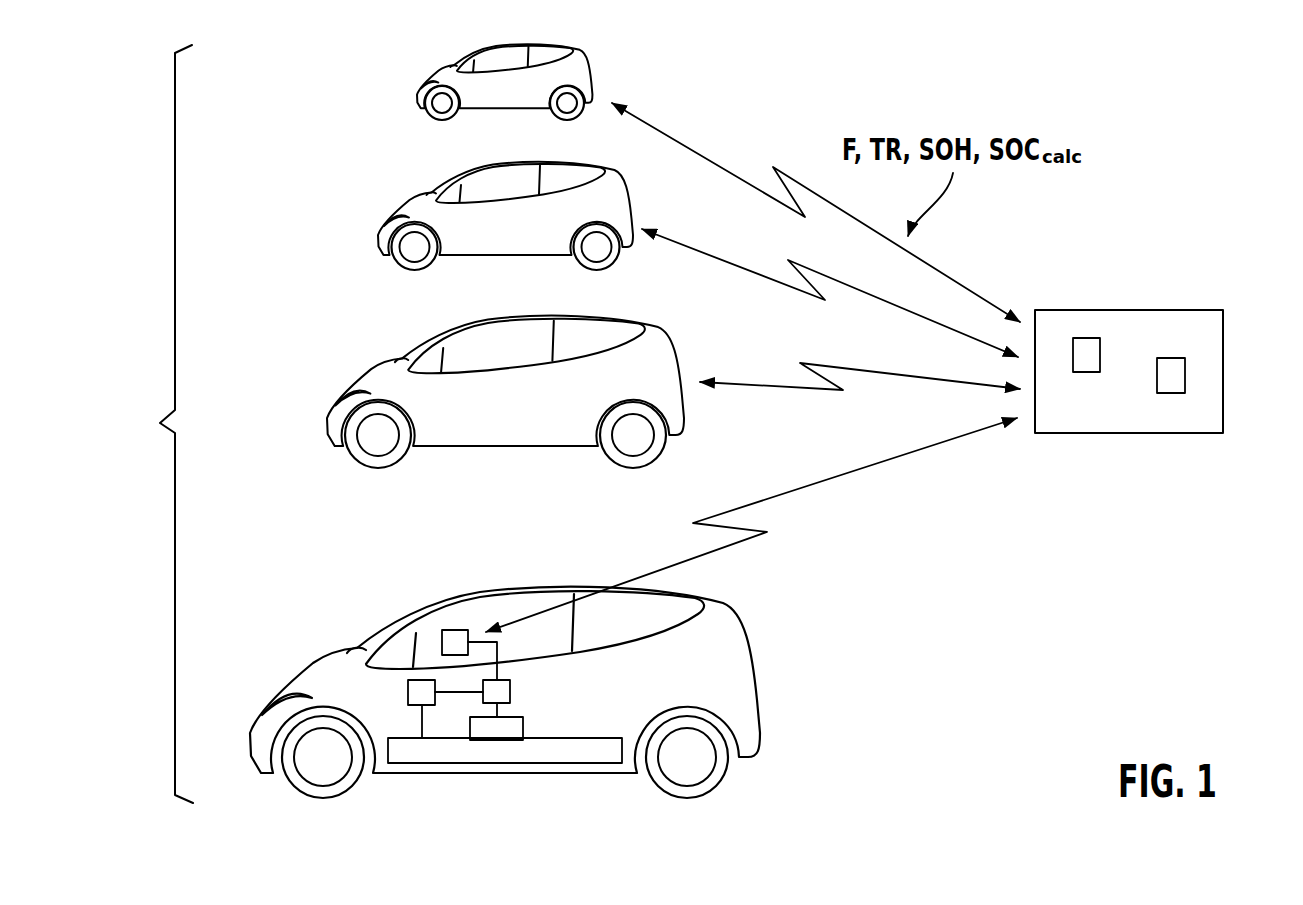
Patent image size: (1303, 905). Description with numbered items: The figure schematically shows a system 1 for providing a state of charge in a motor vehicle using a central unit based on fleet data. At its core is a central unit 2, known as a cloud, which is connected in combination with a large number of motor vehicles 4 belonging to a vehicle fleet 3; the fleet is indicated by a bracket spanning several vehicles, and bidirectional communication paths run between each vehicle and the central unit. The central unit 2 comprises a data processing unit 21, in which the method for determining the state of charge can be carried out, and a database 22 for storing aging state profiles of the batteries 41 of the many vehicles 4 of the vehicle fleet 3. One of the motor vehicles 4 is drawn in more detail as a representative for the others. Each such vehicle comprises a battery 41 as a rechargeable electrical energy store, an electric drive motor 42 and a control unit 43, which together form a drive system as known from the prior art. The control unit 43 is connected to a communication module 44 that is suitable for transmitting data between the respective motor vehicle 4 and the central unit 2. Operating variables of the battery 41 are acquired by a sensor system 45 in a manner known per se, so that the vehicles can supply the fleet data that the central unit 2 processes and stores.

The system 1 is at (1204, 156).
The central unit 2 is at (1133, 323).
The data processing unit 21 is at (1083, 338).
The database 22 is at (1170, 358).
The vehicle fleet 3 is at (167, 424).
The motor vehicle 4 is at (445, 80).
The battery 41 is at (543, 765).
The electric drive motor 42 is at (408, 692).
The control unit 43 is at (510, 688).
The communication module 44 is at (457, 630).
The sensor system 45 is at (523, 723).